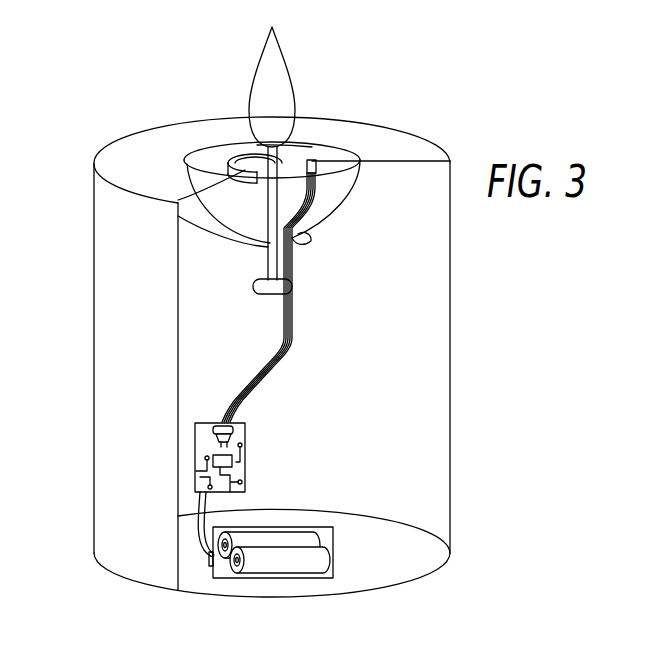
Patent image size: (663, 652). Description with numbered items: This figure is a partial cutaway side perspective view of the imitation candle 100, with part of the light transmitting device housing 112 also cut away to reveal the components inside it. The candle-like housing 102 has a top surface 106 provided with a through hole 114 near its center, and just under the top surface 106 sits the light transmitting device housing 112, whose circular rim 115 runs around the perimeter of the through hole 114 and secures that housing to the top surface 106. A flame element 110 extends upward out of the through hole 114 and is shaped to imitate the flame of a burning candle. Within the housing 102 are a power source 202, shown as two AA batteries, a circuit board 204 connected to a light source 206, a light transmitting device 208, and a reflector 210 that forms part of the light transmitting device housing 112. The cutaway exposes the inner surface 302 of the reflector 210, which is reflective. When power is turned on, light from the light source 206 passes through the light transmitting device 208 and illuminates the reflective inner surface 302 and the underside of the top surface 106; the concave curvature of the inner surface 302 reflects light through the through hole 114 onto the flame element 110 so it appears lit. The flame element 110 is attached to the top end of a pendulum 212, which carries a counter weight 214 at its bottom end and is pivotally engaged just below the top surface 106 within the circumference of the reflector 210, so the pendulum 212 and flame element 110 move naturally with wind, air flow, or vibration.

The imitation candle 100 is at (440, 72).
The housing 102 is at (95, 232).
The top surface 106 is at (143, 143).
The flame element 110 is at (277, 73).
The light transmitting device housing 112 is at (337, 177).
The through hole 114 is at (257, 163).
The circular rim 115 is at (311, 158).
The power source 202 is at (262, 564).
The circuit board 204 is at (205, 483).
The light source 206 is at (216, 438).
The light transmitting device 208 is at (259, 371).
The reflector 210 is at (232, 210).
The pendulum 212 is at (268, 252).
The counter weight 214 is at (252, 284).
The inner surface 302 is at (312, 218).